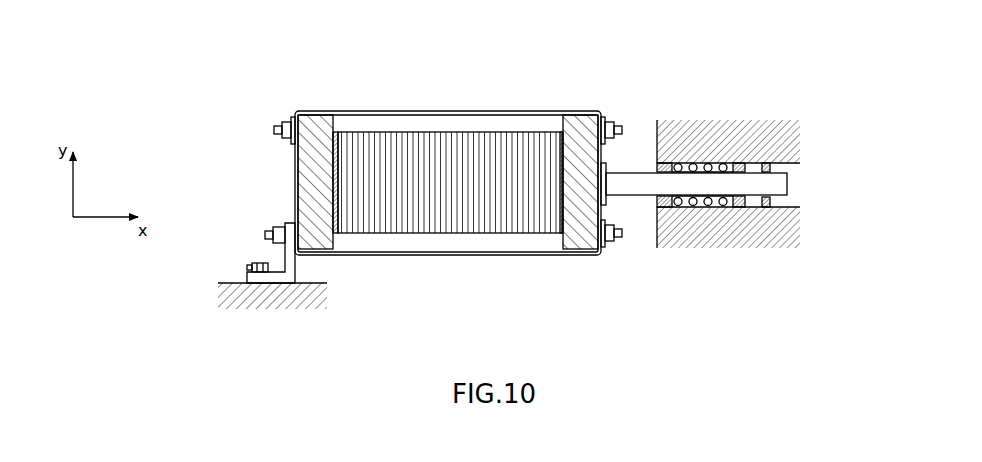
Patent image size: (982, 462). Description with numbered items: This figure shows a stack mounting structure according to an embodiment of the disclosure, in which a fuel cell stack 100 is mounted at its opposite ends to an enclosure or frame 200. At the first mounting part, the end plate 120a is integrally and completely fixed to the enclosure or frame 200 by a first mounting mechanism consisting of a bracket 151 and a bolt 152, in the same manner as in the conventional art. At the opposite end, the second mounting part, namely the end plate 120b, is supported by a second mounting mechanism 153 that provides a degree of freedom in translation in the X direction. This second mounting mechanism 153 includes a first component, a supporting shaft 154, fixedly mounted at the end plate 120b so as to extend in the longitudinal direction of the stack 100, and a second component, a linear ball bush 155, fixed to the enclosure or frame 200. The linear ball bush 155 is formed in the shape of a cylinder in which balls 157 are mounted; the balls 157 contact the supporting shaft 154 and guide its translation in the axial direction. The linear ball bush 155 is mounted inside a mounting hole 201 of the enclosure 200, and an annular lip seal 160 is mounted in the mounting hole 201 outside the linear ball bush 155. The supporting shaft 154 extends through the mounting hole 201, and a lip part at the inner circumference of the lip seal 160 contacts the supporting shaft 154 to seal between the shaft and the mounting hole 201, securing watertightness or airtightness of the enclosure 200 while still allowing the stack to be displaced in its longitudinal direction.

The fuel cell stack 100 is at (456, 104).
The end plate 120a is at (312, 184).
The end plate 120b is at (581, 115).
The bracket 151 is at (300, 272).
The bolt 152 is at (250, 268).
The second mounting mechanism 153 is at (698, 213).
The supporting shaft 154 is at (640, 190).
The linear ball bush 155 is at (740, 208).
The balls 157 is at (708, 163).
The lip seal 160 is at (767, 162).
The enclosure or frame 200 is at (700, 127).
The mounting hole 201 is at (795, 165).